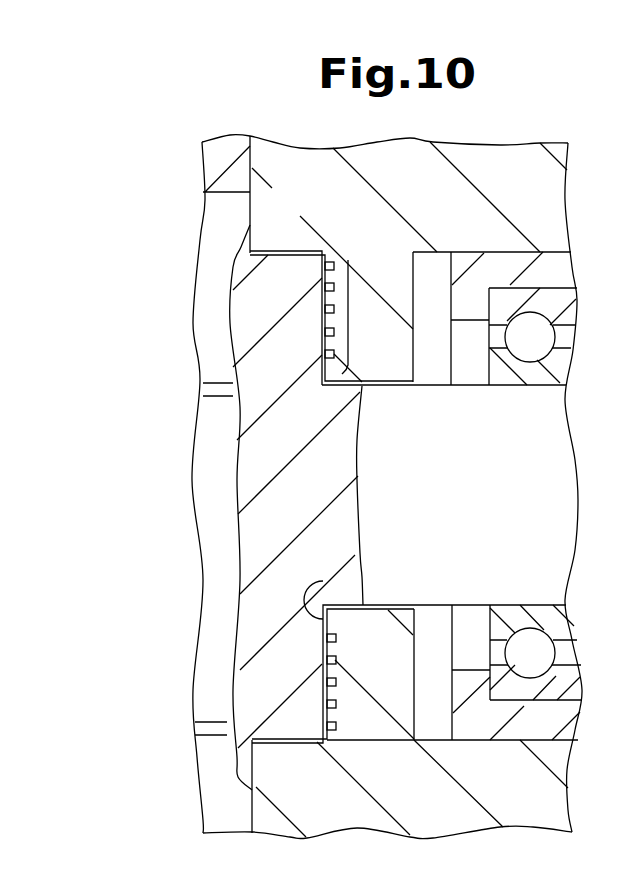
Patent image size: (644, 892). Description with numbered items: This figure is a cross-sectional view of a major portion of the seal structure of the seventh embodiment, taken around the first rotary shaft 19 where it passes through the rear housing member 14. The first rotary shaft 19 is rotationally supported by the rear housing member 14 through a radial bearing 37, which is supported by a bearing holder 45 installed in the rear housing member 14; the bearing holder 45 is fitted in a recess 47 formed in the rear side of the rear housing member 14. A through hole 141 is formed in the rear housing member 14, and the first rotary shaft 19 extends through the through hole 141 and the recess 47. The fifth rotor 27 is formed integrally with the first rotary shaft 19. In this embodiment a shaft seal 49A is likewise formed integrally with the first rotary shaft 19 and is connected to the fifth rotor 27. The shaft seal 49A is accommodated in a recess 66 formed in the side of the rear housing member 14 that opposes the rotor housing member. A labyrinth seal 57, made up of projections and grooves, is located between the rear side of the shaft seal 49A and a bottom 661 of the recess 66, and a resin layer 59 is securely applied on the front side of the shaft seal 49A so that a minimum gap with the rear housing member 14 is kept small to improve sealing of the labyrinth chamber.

The rear housing member 14 is at (557, 221).
The fifth rotor 27 is at (213, 246).
The shaft seal 49A is at (293, 252).
The resin layer 59 is at (321, 300).
The labyrinth seal 57 is at (355, 311).
The recess 47 is at (432, 253).
The radial bearing 37 is at (527, 361).
The through hole 141 is at (398, 388).
The first rotary shaft 19 is at (556, 568).
The bottom 661 is at (324, 582).
The recess 66 is at (300, 743).
The bearing holder 45 is at (566, 720).